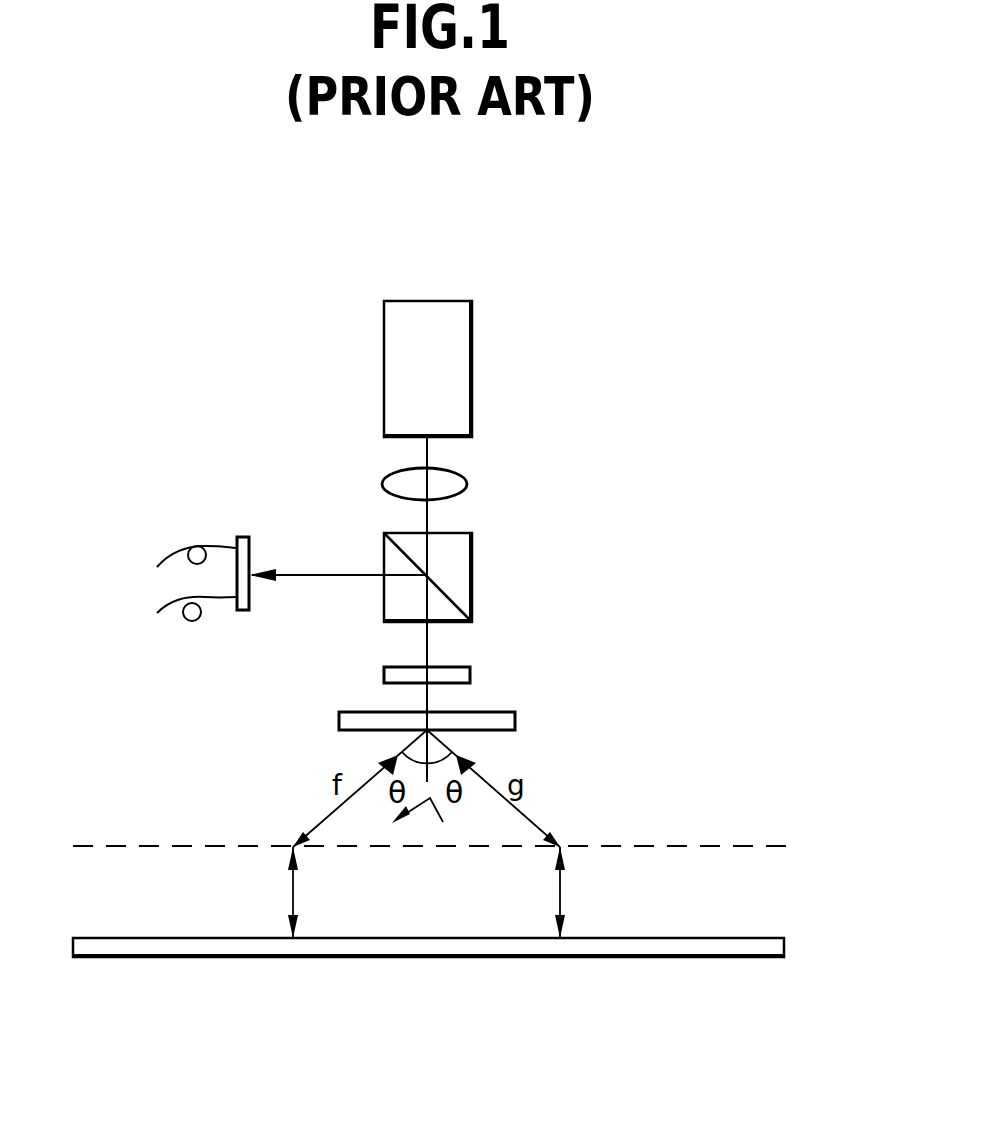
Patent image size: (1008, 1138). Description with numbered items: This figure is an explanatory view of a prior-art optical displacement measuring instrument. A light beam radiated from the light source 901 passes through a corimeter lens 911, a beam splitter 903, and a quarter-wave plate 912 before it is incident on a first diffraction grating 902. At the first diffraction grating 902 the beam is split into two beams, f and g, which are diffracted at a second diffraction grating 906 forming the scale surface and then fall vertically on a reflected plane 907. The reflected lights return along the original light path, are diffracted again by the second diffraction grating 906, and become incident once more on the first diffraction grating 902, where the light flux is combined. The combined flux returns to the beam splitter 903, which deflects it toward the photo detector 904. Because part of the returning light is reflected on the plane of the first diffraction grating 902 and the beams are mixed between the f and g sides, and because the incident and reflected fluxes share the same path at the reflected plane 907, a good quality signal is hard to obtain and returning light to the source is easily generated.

The light source 901 is at (472, 326).
The corimeter lens 911 is at (458, 481).
The beam splitter 903 is at (467, 570).
The photo detector 904 is at (247, 537).
The λ/4 plate 912 is at (383, 671).
The first diffraction grating 902 is at (510, 720).
The second diffraction grating 906 is at (673, 846).
The reflected plane 907 is at (768, 947).